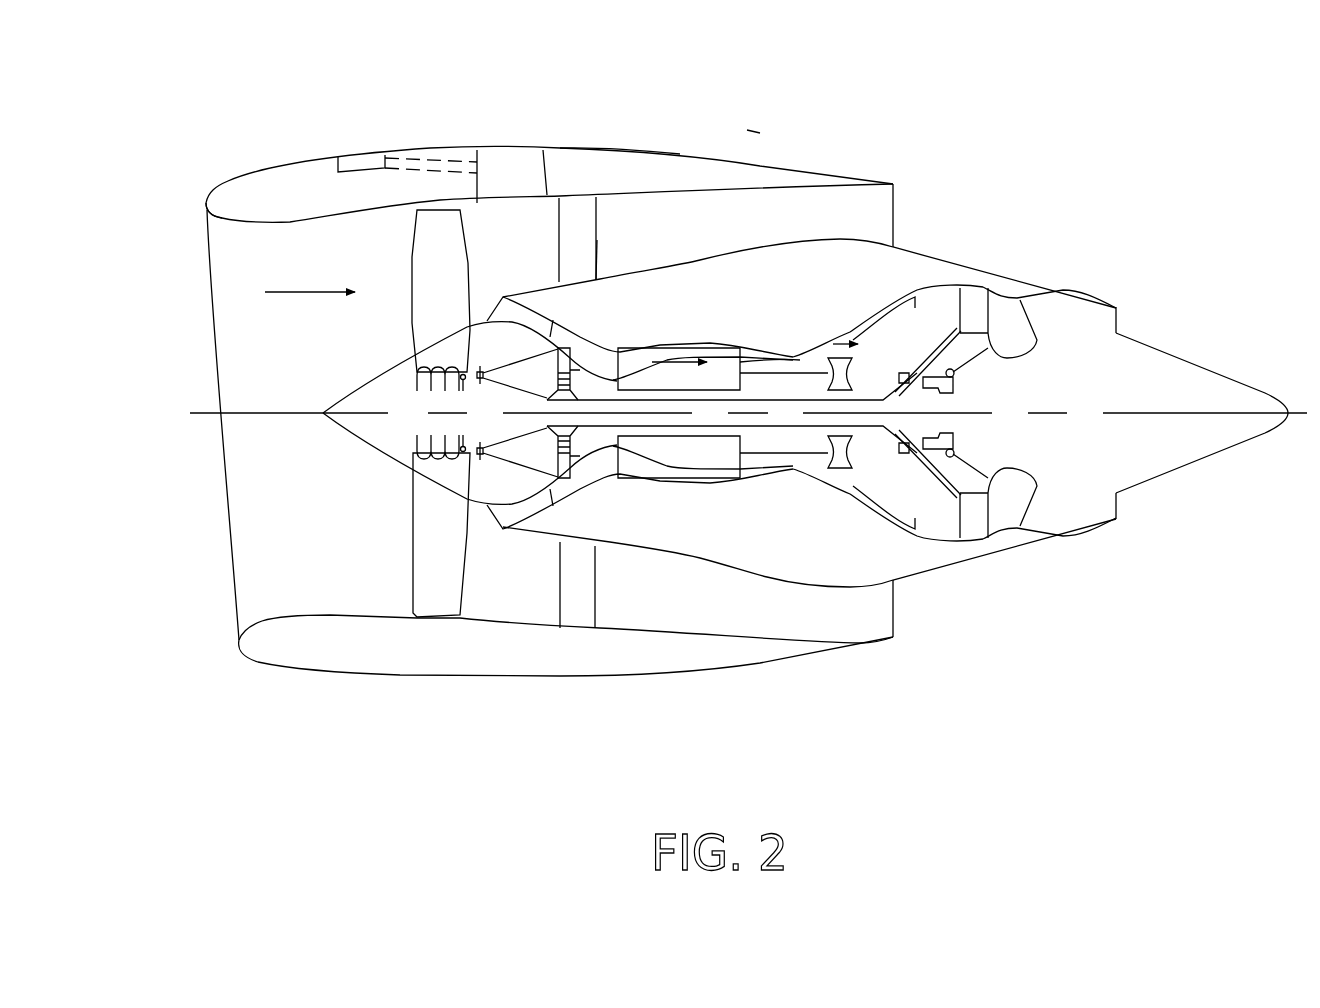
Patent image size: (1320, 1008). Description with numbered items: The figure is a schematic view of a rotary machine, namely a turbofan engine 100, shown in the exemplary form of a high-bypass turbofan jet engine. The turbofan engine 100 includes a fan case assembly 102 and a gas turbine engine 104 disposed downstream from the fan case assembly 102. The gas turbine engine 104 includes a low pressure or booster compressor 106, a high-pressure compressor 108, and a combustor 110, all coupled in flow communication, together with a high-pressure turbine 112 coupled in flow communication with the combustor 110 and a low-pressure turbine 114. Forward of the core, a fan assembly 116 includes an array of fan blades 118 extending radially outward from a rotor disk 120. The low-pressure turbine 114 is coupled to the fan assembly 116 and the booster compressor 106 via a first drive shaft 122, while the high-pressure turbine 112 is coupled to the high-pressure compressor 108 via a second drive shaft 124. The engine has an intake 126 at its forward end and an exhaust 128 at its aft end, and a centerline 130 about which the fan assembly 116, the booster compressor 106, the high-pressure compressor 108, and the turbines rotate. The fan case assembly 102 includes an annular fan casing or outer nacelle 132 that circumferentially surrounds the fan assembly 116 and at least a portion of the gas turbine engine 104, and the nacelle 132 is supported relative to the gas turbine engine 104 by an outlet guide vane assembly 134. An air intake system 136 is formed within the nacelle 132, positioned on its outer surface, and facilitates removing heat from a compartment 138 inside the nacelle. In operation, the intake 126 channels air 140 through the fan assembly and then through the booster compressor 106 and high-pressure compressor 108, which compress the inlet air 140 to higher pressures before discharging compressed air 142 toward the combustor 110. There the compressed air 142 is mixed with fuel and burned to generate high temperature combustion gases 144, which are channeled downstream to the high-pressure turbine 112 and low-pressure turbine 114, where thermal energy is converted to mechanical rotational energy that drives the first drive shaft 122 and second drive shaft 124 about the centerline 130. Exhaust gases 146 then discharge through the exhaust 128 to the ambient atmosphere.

The turbofan engine 100 is at (747, 130).
The fan case assembly 102 is at (245, 663).
The gas turbine engine 104 is at (841, 252).
The booster compressor 106 is at (520, 300).
The high-pressure compressor 108 is at (630, 360).
The combustor 110 is at (794, 352).
The high-pressure turbine 112 is at (847, 490).
The low-pressure turbine 114 is at (917, 287).
The fan assembly 116 is at (392, 340).
The fan blades 118 is at (462, 268).
The rotor disk 120 is at (425, 387).
The first drive shaft 122 is at (592, 430).
The second drive shaft 124 is at (770, 360).
The intake 126 is at (223, 237).
The exhaust 128 is at (1130, 308).
The centerline 130 is at (1197, 413).
The outer nacelle 132 is at (585, 148).
The outlet guide vane assembly 134 is at (597, 240).
The air intake system 136 is at (379, 145).
The compartment 138 is at (512, 160).
The air 140 is at (295, 292).
The compressed air 142 is at (660, 361).
The combustion gases 144 is at (833, 344).
The exhaust gases 146 is at (1083, 308).